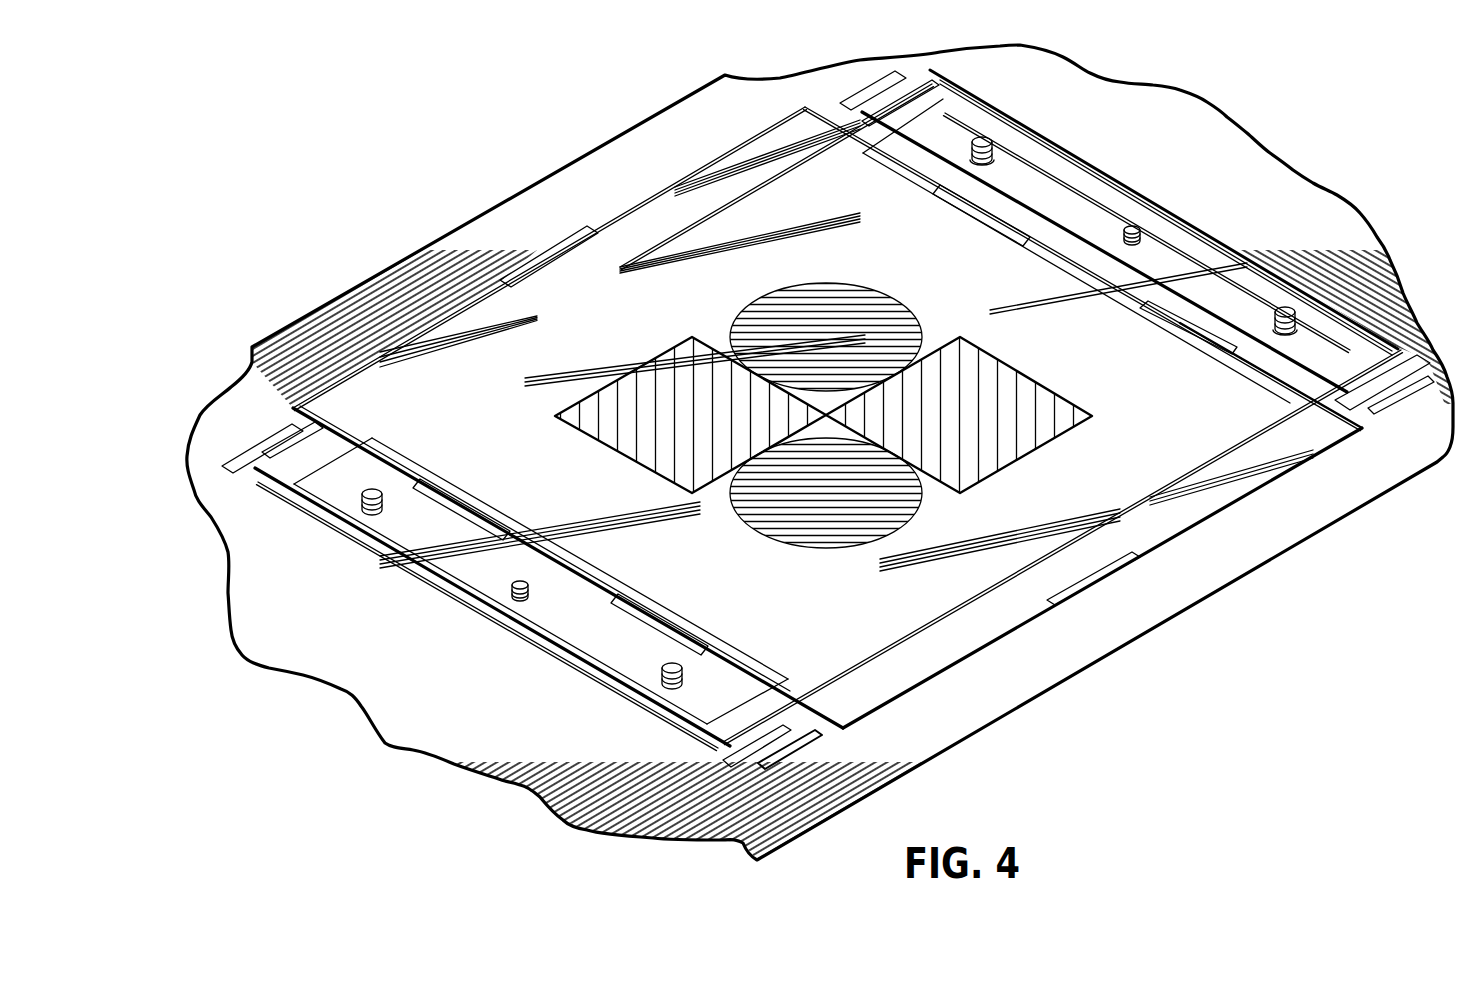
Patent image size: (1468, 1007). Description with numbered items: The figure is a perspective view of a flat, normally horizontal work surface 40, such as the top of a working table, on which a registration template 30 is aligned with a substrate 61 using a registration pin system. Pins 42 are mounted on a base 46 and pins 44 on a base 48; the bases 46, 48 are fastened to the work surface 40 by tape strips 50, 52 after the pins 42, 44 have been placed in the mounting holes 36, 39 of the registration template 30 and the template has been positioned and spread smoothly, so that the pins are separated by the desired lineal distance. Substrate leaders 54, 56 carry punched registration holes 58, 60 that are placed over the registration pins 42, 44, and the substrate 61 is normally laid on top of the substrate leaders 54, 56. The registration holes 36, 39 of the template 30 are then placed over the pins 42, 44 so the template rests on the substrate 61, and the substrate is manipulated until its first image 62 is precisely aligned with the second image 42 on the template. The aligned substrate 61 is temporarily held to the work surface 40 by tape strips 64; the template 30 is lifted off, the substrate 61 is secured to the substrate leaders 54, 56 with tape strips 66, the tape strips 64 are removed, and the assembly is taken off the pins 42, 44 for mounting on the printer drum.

The registration template 30 is at (950, 614).
The mounting hole 36 is at (378, 510).
The mounting hole 39 is at (992, 148).
The work surface 40 is at (342, 640).
The pin 42 is at (1048, 448).
The pin 44 is at (976, 140).
The base 46 is at (782, 742).
The base 48 is at (1385, 412).
The tape strip 50 is at (275, 440).
The tape strip 52 is at (880, 92).
The substrate leader 54 is at (405, 456).
The substrate leader 56 is at (897, 177).
The registration hole 58 is at (362, 510).
The registration hole 60 is at (985, 162).
The substrate 61 is at (973, 657).
The first image 62 is at (882, 300).
The tape strip 64 is at (568, 246).
The tape strip 66 is at (1000, 233).